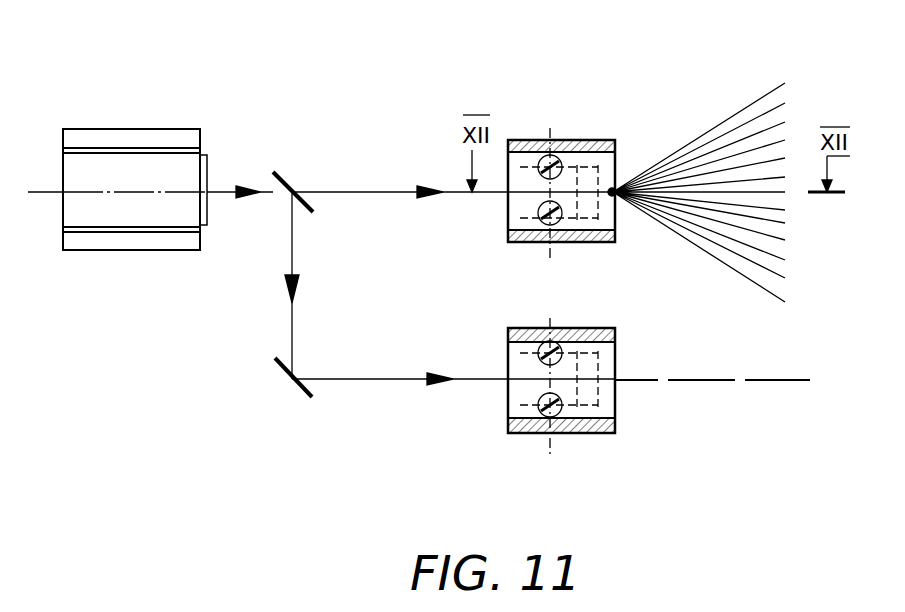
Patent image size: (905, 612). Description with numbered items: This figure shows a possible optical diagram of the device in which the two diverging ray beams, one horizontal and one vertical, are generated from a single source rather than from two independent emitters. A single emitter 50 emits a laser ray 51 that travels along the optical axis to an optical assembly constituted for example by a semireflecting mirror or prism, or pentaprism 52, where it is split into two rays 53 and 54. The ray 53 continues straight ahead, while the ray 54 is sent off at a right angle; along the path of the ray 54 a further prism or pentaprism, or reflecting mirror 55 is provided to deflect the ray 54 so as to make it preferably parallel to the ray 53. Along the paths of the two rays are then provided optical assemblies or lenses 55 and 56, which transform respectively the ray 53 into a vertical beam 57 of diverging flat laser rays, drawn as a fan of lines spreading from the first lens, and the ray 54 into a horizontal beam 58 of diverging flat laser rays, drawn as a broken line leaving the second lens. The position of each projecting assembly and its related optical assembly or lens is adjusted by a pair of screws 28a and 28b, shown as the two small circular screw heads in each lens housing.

The emitter 50 is at (108, 158).
The laser beam 51 is at (228, 188).
The semireflecting mirror or prism, or pentaprism 52 is at (280, 175).
The ray 53 is at (357, 197).
The ray 54 is at (298, 312).
The reflecting mirror / lens 55 is at (588, 165).
The optical assembly or lens 56 is at (593, 393).
The vertical beam of diverging flat laser rays 57 is at (727, 115).
The horizontal beam of diverging flat laser rays 58 is at (698, 383).
The screw 28a is at (538, 211).
The screw 28b is at (548, 160).